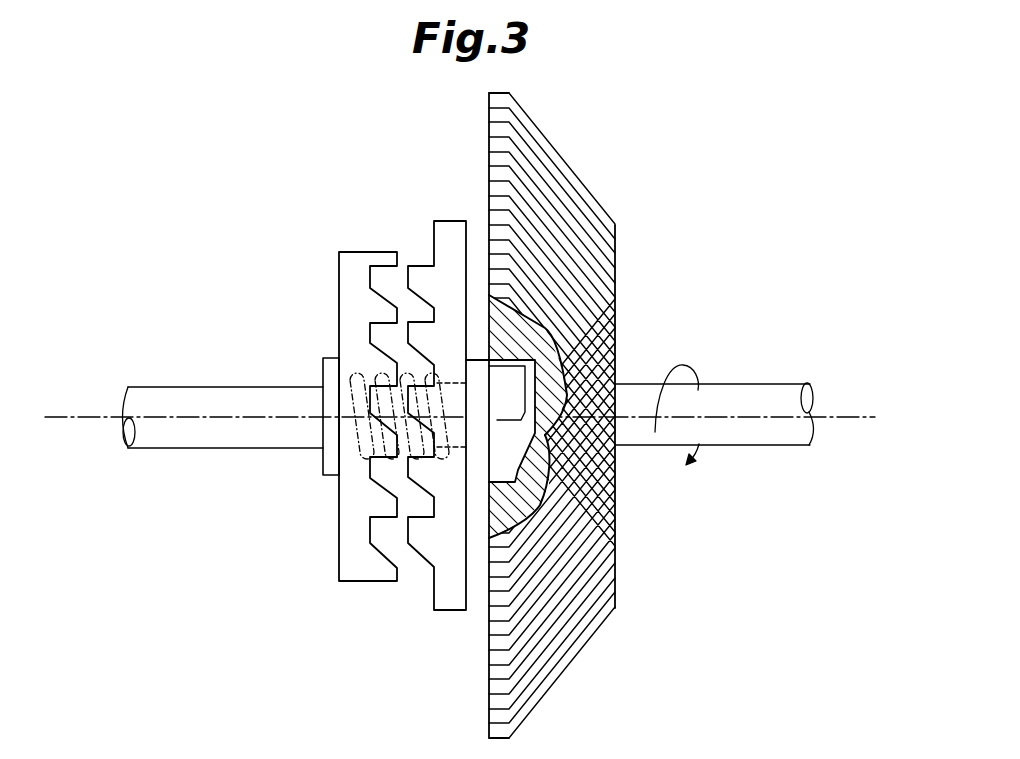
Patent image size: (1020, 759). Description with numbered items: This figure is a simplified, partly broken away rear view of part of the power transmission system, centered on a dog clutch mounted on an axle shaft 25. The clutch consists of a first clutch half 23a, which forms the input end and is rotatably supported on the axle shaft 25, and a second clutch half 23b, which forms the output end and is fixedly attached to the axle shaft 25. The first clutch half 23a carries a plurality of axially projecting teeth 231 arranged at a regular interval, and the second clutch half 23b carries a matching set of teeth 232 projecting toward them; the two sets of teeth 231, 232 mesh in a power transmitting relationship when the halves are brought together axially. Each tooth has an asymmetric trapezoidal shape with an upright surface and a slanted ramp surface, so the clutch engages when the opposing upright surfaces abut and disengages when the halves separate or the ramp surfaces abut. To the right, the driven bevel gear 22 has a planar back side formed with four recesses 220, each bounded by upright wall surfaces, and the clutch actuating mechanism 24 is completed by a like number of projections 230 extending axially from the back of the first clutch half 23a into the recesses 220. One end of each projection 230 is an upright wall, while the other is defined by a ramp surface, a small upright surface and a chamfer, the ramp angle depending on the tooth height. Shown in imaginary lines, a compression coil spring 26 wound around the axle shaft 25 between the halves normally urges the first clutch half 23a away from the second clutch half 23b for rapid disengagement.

The driven bevel gear 22 is at (573, 642).
The first clutch half 23a is at (450, 612).
The second clutch half 23b is at (369, 585).
The clutch actuating mechanism 24 is at (480, 262).
The axle shaft 25 is at (247, 436).
The compression coil spring 26 is at (360, 458).
The recess 220 is at (517, 462).
The projection 230 is at (510, 382).
The teeth 231 is at (410, 280).
The teeth 232 is at (400, 312).